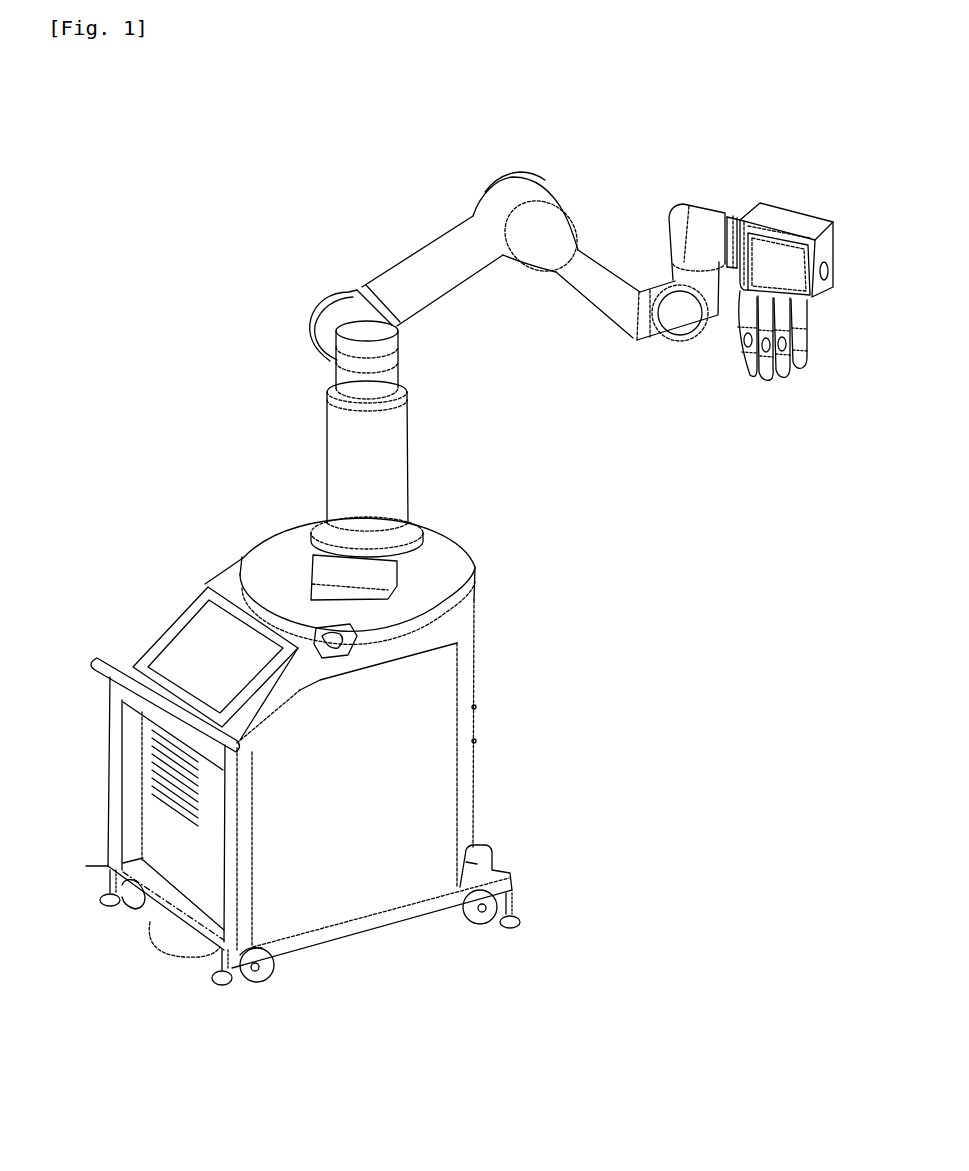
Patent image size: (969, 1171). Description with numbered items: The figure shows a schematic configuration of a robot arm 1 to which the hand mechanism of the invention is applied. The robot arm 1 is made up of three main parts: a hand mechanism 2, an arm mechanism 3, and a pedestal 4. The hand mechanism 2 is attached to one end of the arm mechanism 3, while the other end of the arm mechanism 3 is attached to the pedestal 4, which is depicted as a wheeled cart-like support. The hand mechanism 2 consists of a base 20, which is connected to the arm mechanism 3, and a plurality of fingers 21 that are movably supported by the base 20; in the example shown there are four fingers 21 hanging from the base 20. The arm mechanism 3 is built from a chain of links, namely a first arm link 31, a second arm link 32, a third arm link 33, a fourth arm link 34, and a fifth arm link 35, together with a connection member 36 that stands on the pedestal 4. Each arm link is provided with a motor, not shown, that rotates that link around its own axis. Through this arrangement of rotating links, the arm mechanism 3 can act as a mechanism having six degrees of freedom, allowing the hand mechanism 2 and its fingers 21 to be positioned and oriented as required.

The robot arm 1 is at (186, 276).
The hand mechanism 2 is at (822, 203).
The arm mechanism 3 is at (416, 160).
The pedestal 4 is at (146, 618).
The base 20 is at (773, 275).
The fingers 21 is at (763, 383).
The first arm link 31 is at (683, 205).
The second arm link 32 is at (680, 280).
The third arm link 33 is at (600, 300).
The fourth arm link 34 is at (443, 277).
The fifth arm link 35 is at (388, 377).
The connection member 36 is at (385, 465).